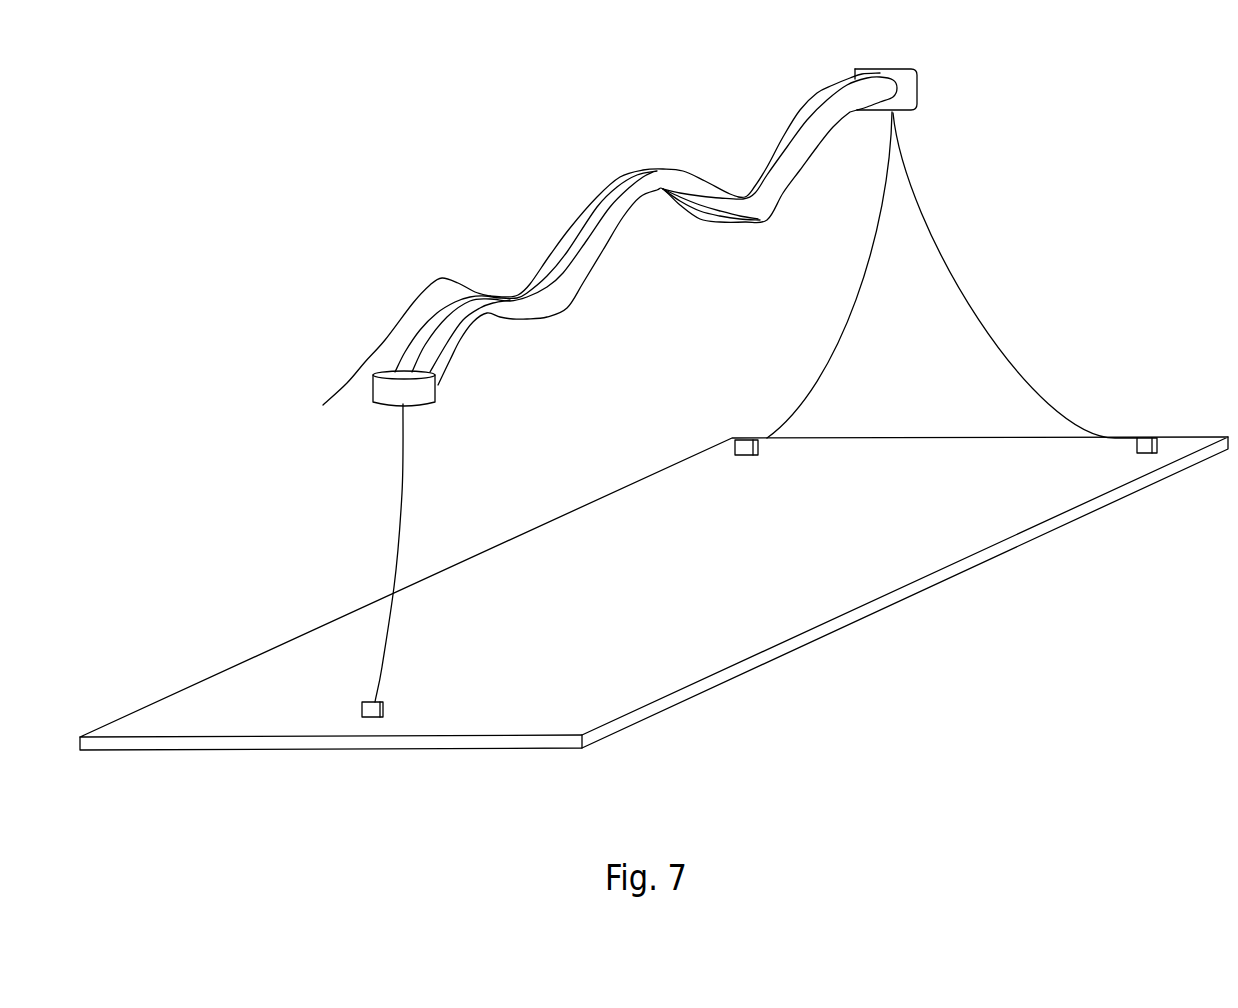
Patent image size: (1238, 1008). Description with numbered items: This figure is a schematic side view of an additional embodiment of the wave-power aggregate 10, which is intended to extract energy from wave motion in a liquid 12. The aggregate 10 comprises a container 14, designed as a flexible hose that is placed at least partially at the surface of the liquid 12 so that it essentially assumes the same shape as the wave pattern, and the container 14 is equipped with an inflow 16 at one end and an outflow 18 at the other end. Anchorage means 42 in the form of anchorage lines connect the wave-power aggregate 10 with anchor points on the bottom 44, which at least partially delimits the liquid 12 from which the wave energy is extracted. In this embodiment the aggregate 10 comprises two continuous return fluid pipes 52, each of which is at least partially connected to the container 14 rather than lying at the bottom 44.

The wave-power aggregate 10 is at (553, 157).
The liquid 12 is at (324, 405).
The container 14 is at (597, 245).
The inflow 16 is at (397, 377).
The outflow 18 is at (880, 71).
The anchorage means 42 is at (1000, 345).
The bottom 44 is at (668, 573).
The return fluid pipe 52 is at (632, 203).